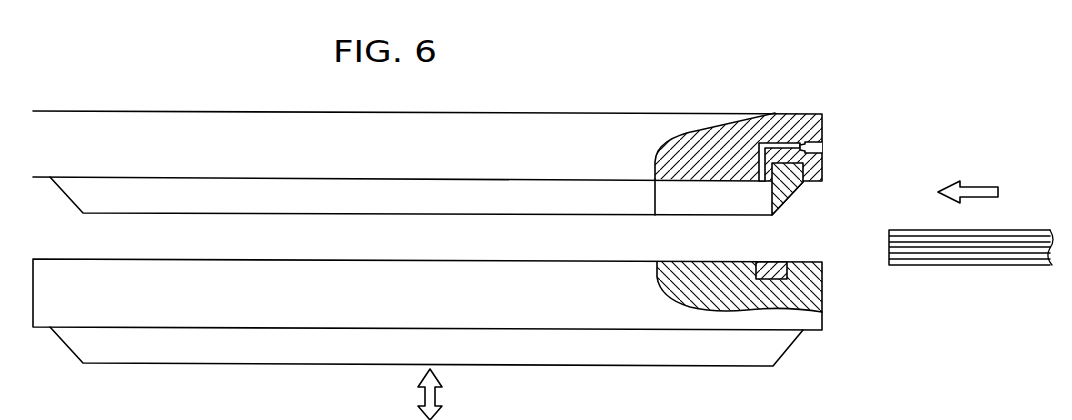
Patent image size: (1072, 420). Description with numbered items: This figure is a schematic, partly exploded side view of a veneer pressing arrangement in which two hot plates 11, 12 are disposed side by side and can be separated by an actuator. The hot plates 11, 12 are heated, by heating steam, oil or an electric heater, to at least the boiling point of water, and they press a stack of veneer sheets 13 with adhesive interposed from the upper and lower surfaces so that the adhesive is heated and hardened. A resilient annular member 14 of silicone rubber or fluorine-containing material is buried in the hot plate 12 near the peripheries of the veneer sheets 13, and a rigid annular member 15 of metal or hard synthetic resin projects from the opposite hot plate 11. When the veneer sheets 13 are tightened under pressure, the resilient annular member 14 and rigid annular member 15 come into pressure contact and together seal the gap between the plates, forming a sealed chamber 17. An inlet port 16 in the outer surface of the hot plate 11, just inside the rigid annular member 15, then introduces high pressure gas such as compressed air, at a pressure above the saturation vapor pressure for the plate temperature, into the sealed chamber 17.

The hot plate 11 is at (605, 133).
The hot plate 12 is at (562, 315).
The veneer sheets 13 is at (993, 248).
The resilient annular member 14 is at (787, 278).
The rigid annular member 15 is at (823, 177).
The inlet port 16 is at (823, 145).
The sealed chamber 17 is at (752, 190).